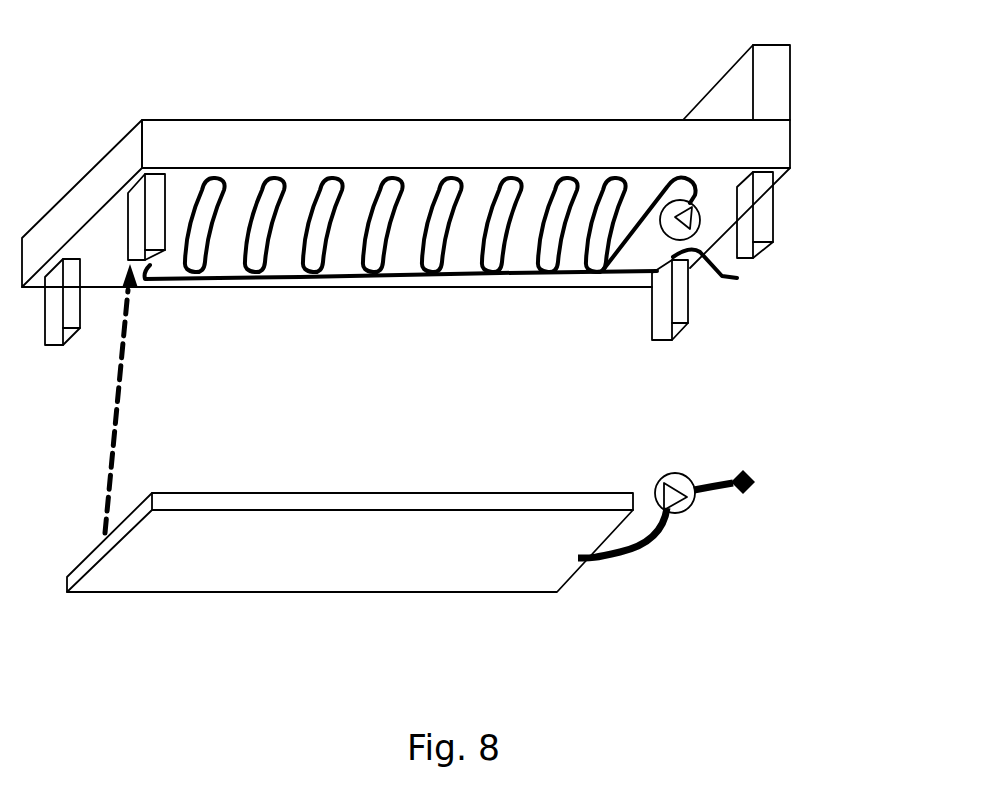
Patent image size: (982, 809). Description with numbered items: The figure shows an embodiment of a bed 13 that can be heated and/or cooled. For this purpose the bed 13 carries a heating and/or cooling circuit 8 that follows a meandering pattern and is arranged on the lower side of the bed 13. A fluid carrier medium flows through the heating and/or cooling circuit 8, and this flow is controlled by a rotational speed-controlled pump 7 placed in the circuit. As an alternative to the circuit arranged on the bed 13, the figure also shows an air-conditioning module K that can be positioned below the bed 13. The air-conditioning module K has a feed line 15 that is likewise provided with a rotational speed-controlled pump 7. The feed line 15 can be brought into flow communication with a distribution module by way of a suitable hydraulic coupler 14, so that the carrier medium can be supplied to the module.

The bed 13 is at (430, 147).
The heating and/or cooling circuit 8 is at (258, 283).
The air-conditioning module K is at (375, 503).
The rotational speed-controlled pump 7 is at (683, 228).
The hydraulic coupler 14 is at (756, 482).
The feed line 15 is at (643, 545).